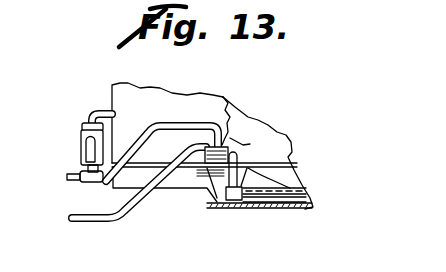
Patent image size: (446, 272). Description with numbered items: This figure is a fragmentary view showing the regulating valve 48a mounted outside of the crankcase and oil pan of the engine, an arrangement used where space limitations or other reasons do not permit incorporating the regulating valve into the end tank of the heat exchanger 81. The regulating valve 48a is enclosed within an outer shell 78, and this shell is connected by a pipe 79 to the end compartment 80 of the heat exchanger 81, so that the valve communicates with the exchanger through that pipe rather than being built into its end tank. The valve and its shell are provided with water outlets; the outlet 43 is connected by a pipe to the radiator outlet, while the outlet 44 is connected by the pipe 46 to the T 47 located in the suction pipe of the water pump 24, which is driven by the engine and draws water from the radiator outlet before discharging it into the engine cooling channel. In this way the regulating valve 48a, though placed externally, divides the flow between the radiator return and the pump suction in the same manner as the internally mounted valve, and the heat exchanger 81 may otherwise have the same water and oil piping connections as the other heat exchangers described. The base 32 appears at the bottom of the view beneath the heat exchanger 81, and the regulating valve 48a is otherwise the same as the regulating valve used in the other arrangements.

The water pump 24 is at (80, 141).
The base 32 is at (280, 208).
The outlet 43 is at (204, 147).
The outlet 44 is at (224, 112).
The pipe 46 is at (148, 123).
The T 47 is at (80, 188).
The regulating valve 48a is at (246, 146).
The outer shell 78 is at (228, 144).
The pipe 79 is at (230, 181).
The end compartment 80 is at (227, 198).
The heat exchanger 81 is at (260, 206).